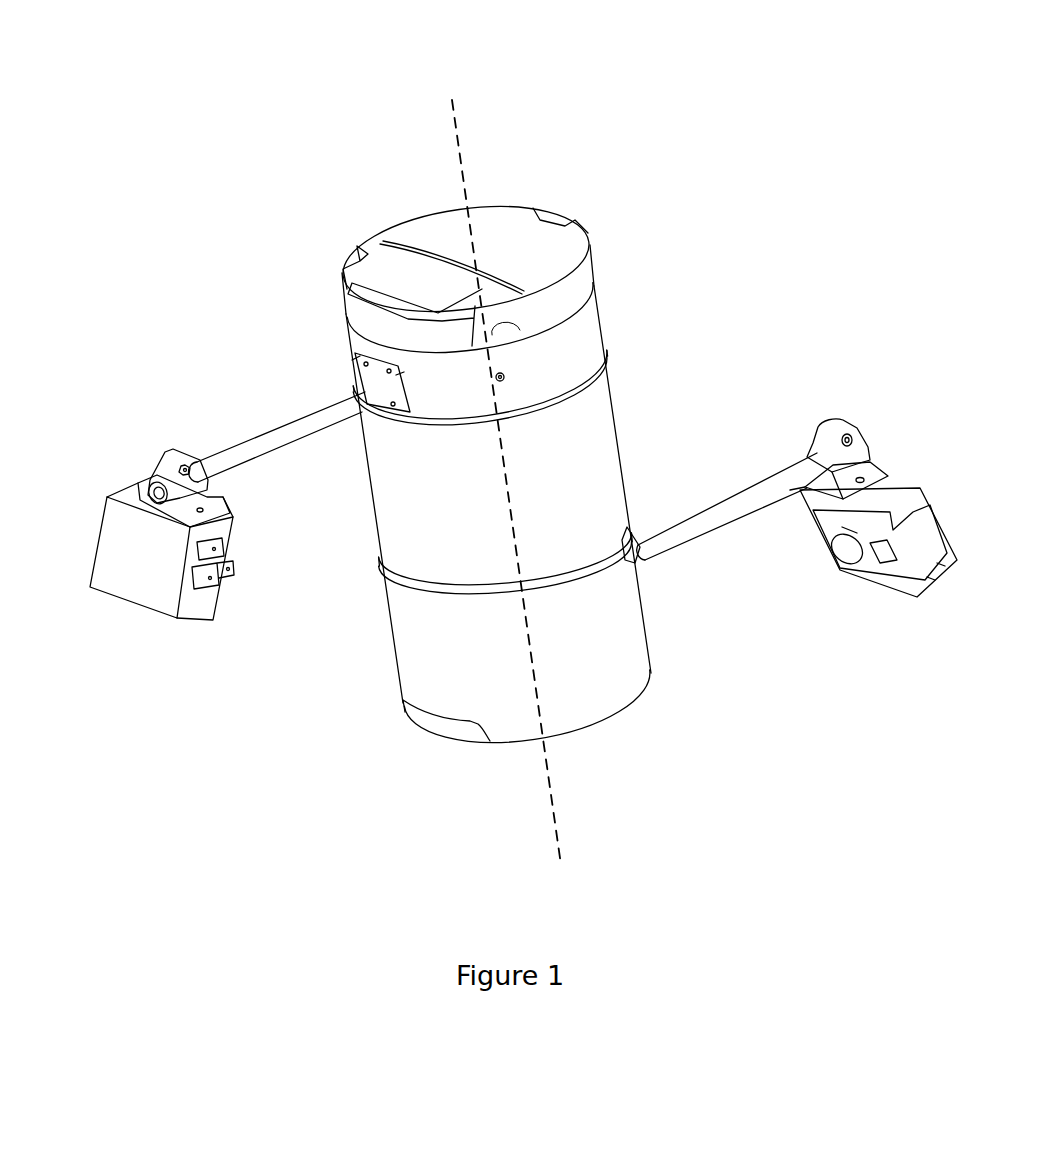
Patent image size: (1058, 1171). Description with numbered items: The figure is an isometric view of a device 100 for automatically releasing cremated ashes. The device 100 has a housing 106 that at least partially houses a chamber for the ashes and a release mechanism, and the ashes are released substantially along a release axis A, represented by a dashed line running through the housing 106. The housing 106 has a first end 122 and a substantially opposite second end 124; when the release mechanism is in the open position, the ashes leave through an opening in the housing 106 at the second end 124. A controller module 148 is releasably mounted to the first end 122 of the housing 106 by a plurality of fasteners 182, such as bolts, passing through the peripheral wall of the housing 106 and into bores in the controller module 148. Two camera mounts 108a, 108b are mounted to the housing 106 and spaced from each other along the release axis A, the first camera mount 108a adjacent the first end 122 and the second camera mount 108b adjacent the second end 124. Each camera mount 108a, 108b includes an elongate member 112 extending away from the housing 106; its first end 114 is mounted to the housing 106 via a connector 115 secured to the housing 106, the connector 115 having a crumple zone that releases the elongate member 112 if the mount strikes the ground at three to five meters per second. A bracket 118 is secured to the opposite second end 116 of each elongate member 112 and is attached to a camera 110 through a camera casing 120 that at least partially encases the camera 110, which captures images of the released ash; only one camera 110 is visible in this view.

The device 100 is at (301, 124).
The release axis A is at (460, 155).
The housing 106 is at (491, 462).
The controller module 148 is at (577, 253).
The first end 122 is at (352, 333).
The fasteners 182 is at (501, 381).
The second end 124 is at (617, 702).
The first camera mount 108a is at (200, 372).
The second camera mount 108b is at (818, 643).
The elongate member 112 is at (267, 443).
The first end 114 is at (481, 485).
The connector 115 is at (358, 388).
The second end 116 is at (486, 405).
The bracket 118 is at (170, 482).
The camera casing 120 is at (143, 573).
The camera 110 is at (910, 563).